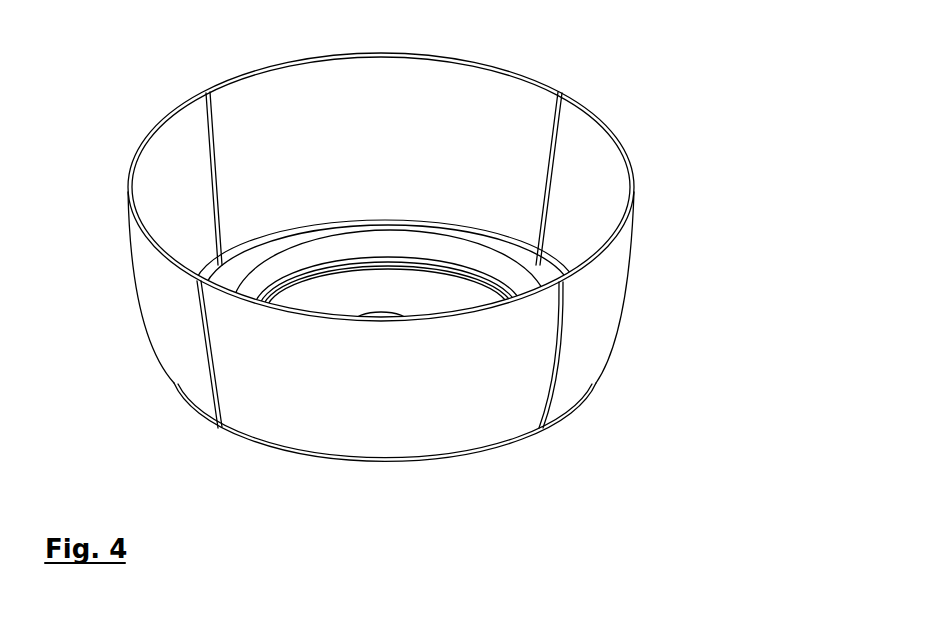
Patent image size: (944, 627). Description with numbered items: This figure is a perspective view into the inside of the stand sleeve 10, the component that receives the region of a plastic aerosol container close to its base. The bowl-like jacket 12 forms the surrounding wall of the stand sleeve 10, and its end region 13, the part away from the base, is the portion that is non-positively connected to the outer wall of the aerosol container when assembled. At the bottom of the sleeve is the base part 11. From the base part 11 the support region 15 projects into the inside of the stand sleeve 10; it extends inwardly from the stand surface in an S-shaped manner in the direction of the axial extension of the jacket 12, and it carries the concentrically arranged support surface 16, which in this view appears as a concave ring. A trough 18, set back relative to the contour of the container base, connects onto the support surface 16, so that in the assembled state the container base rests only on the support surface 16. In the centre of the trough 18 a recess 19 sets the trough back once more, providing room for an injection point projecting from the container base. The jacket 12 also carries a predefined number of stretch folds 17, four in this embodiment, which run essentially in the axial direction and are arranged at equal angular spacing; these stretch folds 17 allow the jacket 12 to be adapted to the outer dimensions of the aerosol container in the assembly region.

The stand sleeve 10 is at (683, 284).
The base part 11 is at (247, 210).
The jacket 12 is at (400, 405).
The end region 13 is at (636, 194).
The support region 15 is at (282, 246).
The support surface 16 is at (322, 252).
The stretch folds 17 is at (210, 114).
The trough 18 is at (368, 281).
The recess 19 is at (383, 318).